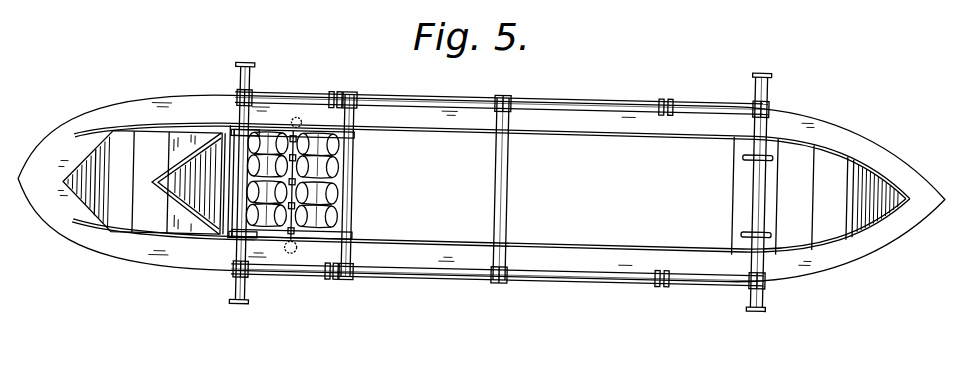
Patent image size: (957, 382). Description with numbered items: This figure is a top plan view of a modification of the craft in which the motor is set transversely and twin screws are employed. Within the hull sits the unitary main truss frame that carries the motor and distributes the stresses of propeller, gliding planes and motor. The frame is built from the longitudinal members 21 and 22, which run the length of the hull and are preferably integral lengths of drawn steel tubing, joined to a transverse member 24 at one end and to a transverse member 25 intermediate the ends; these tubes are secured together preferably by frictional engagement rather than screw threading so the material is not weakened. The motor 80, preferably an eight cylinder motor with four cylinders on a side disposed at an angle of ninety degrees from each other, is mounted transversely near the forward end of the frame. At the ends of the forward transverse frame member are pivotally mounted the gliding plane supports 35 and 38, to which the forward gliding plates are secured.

The longitudinal member 21 is at (543, 100).
The longitudinal member 22 is at (550, 277).
The transverse member 24 is at (765, 121).
The transverse member 25 is at (502, 198).
The gliding plane support 35 is at (248, 70).
The gliding plane support 38 is at (248, 308).
The motor 80 is at (265, 137).